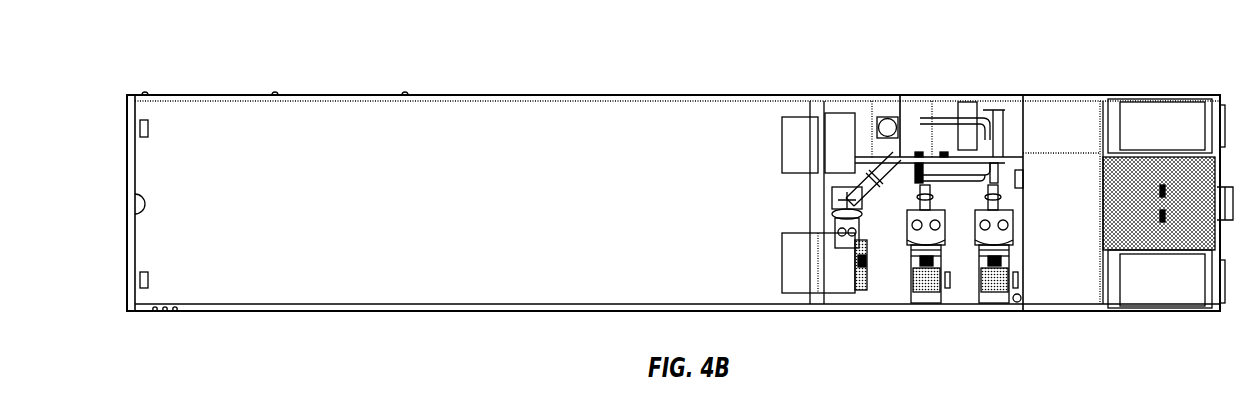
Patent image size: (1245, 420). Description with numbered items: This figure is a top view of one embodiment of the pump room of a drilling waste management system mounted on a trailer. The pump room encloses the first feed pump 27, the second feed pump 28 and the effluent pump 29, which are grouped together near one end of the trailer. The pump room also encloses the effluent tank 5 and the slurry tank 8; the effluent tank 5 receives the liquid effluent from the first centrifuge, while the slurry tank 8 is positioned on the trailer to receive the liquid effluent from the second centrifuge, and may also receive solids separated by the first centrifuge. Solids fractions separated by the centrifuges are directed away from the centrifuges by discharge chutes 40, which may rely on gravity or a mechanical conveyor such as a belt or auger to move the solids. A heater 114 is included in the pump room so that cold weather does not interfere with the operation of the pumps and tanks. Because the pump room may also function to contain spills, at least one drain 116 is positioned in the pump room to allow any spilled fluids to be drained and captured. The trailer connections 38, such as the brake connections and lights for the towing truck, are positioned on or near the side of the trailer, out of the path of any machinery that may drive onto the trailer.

The effluent tank 5 is at (1013, 107).
The slurry tank 8 is at (913, 108).
The first feed pump 27 is at (927, 298).
The second feed pump 28 is at (993, 298).
The effluent pump 29 is at (867, 255).
The trailer connections 38 is at (177, 313).
The discharge chutes 40 is at (782, 143).
The heater 114 is at (1024, 180).
The drain 116 is at (1021, 300).